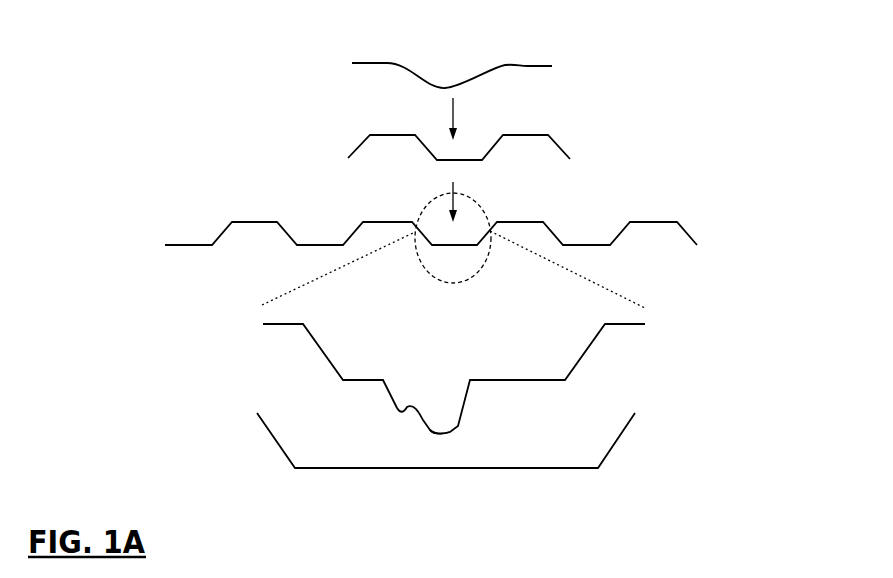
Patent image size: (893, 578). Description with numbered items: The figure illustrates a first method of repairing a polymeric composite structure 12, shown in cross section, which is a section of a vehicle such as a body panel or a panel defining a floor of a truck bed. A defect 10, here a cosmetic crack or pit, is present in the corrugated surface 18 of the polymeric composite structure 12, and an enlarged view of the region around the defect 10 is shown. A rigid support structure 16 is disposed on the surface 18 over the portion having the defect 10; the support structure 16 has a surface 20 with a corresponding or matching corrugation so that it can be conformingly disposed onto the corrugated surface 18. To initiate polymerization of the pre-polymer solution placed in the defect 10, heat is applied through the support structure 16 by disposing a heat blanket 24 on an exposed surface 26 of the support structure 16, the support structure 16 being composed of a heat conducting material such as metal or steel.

The defect 10 is at (440, 420).
The polymeric composite structure 12 is at (683, 229).
The support structure 16 is at (560, 143).
The surface 18 is at (368, 379).
The surface 20 is at (592, 248).
The heat blanket 24 is at (527, 66).
The exposed surface 26 is at (393, 135).